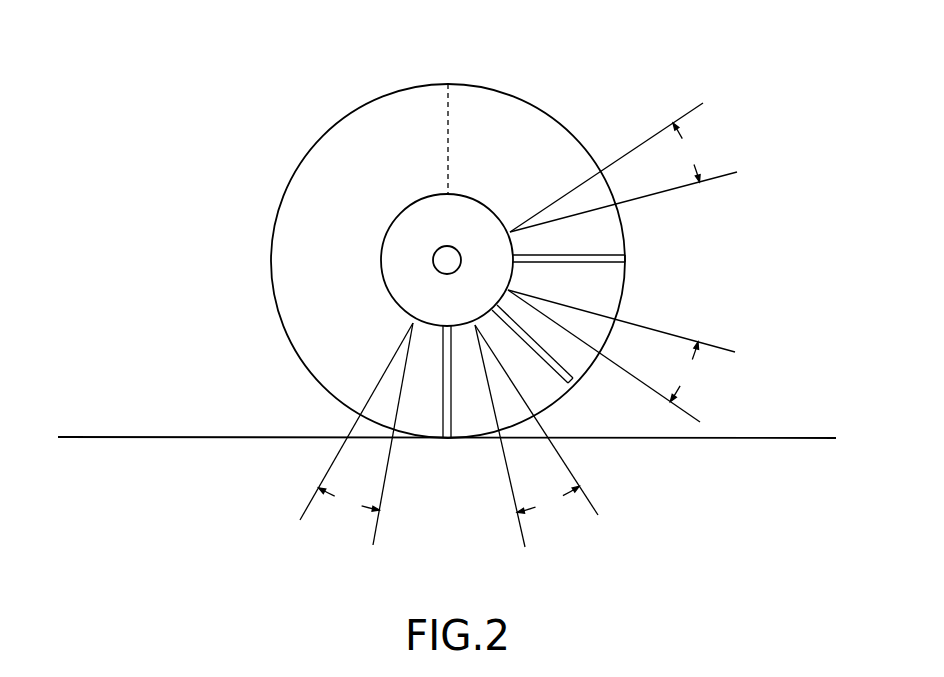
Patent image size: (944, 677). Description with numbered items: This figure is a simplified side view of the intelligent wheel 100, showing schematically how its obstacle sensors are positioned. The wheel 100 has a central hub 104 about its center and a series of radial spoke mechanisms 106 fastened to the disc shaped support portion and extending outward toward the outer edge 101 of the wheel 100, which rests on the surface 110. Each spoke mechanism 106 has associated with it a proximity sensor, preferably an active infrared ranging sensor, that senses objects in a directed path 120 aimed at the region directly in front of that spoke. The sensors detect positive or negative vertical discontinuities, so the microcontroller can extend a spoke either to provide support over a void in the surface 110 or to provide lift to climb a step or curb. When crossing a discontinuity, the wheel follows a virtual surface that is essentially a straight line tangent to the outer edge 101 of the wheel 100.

The intelligent wheel 100 is at (258, 158).
The outer edge 101 is at (377, 97).
The central hub 104 is at (496, 197).
The radial spoke mechanism 106 is at (610, 254).
The surface 110 is at (800, 437).
The directed path 120 is at (518, 325).